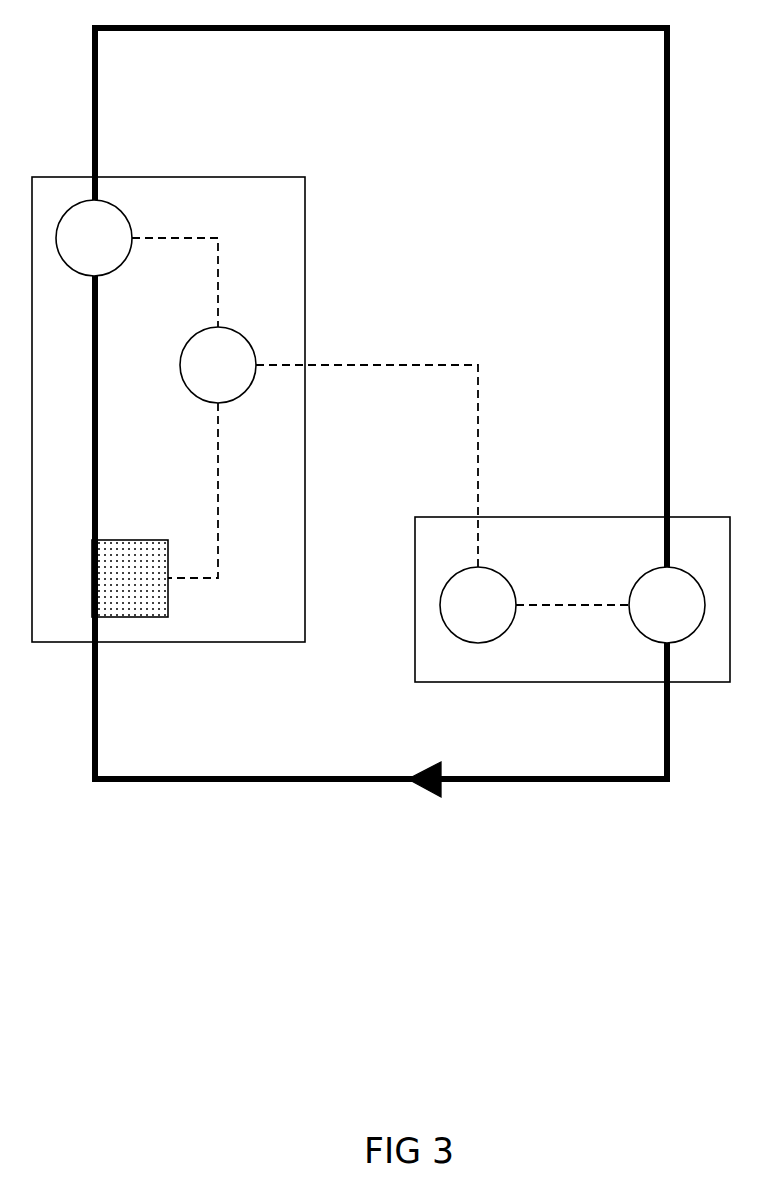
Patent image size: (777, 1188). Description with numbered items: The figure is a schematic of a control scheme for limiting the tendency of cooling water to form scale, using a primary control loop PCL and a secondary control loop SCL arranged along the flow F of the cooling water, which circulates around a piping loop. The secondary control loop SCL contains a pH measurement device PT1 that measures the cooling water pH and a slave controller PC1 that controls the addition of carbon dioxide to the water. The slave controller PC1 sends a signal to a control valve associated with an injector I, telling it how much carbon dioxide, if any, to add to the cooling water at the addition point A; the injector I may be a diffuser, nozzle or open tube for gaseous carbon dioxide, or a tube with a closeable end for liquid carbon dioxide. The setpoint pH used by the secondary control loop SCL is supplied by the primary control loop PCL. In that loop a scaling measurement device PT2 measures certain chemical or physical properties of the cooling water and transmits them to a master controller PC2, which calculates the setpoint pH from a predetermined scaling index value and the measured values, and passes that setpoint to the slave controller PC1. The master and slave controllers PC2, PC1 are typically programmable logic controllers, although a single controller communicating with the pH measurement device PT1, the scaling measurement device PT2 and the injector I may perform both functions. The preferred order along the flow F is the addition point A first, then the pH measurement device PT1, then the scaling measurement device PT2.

The secondary control loop SCL is at (220, 177).
The primary control loop PCL is at (627, 517).
The pH measurement device PT1 is at (94, 238).
The slave controller PC1 is at (305, 408).
The master controller PC2 is at (534, 605).
The scaling measurement device PT2 is at (667, 605).
The addition point A is at (122, 508).
The injector I is at (130, 590).
The flow F is at (410, 748).